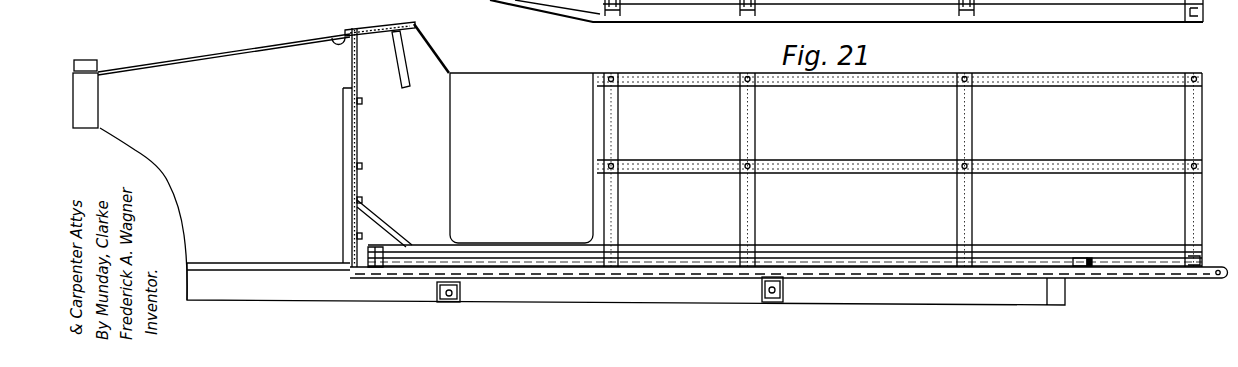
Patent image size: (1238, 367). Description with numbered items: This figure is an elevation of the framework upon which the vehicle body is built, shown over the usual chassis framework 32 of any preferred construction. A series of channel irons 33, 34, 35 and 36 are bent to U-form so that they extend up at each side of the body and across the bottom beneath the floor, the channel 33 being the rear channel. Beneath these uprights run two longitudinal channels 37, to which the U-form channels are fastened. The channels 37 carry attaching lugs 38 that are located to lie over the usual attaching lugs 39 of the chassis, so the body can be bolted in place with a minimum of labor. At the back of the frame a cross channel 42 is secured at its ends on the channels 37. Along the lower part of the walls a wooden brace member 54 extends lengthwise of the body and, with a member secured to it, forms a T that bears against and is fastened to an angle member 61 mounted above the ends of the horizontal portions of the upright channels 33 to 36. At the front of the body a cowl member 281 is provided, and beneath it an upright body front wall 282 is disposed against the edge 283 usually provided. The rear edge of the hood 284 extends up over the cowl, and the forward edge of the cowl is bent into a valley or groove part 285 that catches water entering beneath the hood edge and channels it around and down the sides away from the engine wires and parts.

The framework 32 is at (972, 297).
The channel iron 33 is at (1192, 135).
The channel iron 34 is at (976, 128).
The channel iron 35 is at (759, 131).
The channel iron 36 is at (621, 129).
The longitudinal channel 37 is at (892, 273).
The attaching lug 38 is at (437, 281).
The attaching lug 39 is at (461, 285).
The cross channel 42 is at (1090, 257).
The brace member 54 is at (822, 250).
The angle member 61 is at (697, 1).
The cowl member 281 is at (378, 28).
The body front wall 282 is at (352, 135).
The edge 283 is at (348, 198).
The hood 284 is at (202, 55).
The valley or groove part 285 is at (338, 44).